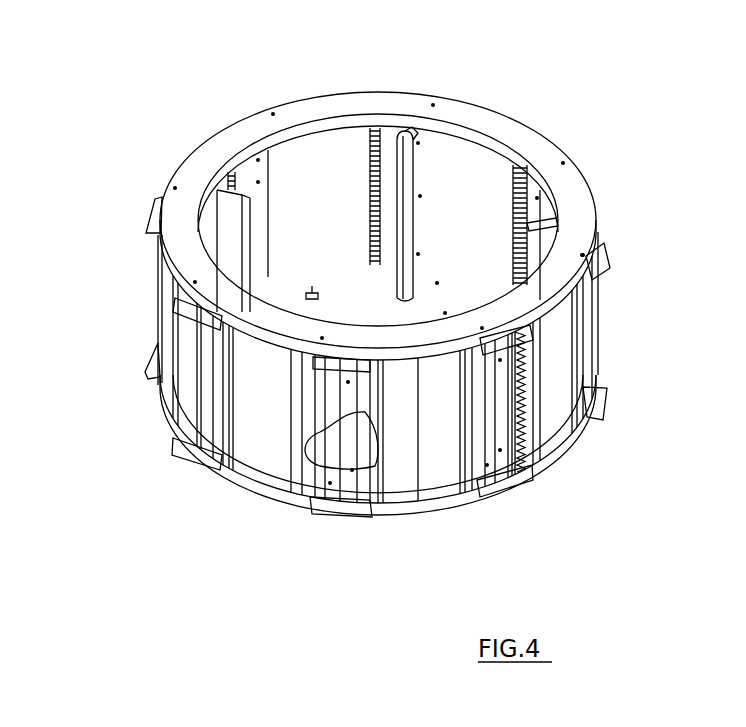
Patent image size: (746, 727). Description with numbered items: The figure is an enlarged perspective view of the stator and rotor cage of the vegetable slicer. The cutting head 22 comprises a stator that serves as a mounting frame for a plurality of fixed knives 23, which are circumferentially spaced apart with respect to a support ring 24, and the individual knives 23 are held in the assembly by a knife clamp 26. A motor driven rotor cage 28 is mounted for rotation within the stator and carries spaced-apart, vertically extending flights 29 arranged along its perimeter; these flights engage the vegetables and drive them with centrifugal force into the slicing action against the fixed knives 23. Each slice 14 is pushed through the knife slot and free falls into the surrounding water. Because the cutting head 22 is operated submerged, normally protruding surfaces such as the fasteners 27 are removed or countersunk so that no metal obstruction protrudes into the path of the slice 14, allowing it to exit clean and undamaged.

The slice 14 is at (340, 443).
The cutting head 22 is at (430, 306).
The knife 23 is at (362, 478).
The support ring 24 is at (578, 208).
The knife clamp 26 is at (608, 400).
The fastener 27 is at (325, 383).
The rotor cage 28 is at (312, 293).
The flight 29 is at (410, 190).